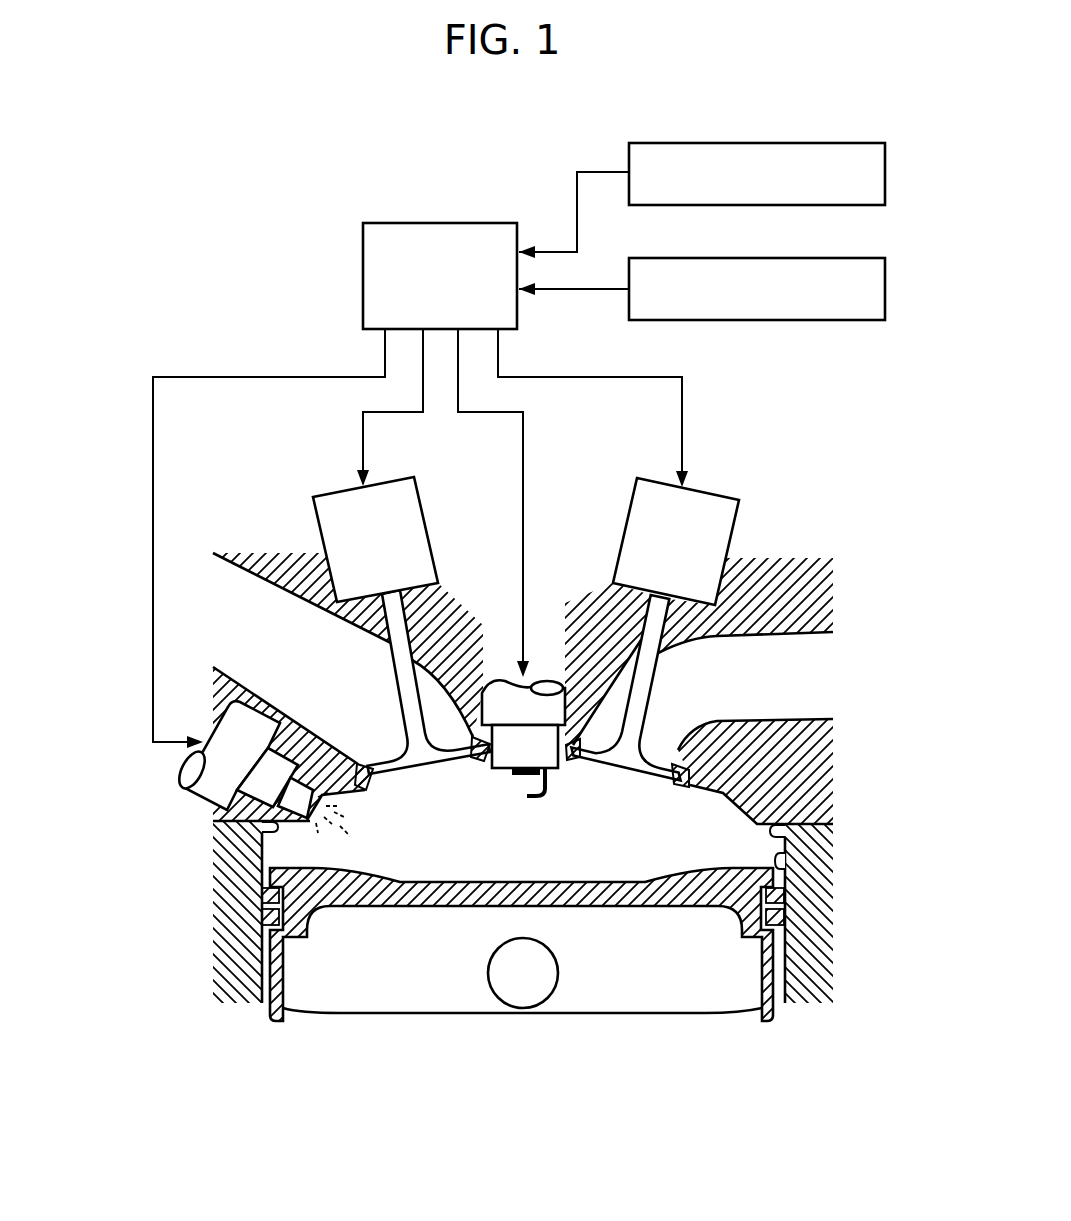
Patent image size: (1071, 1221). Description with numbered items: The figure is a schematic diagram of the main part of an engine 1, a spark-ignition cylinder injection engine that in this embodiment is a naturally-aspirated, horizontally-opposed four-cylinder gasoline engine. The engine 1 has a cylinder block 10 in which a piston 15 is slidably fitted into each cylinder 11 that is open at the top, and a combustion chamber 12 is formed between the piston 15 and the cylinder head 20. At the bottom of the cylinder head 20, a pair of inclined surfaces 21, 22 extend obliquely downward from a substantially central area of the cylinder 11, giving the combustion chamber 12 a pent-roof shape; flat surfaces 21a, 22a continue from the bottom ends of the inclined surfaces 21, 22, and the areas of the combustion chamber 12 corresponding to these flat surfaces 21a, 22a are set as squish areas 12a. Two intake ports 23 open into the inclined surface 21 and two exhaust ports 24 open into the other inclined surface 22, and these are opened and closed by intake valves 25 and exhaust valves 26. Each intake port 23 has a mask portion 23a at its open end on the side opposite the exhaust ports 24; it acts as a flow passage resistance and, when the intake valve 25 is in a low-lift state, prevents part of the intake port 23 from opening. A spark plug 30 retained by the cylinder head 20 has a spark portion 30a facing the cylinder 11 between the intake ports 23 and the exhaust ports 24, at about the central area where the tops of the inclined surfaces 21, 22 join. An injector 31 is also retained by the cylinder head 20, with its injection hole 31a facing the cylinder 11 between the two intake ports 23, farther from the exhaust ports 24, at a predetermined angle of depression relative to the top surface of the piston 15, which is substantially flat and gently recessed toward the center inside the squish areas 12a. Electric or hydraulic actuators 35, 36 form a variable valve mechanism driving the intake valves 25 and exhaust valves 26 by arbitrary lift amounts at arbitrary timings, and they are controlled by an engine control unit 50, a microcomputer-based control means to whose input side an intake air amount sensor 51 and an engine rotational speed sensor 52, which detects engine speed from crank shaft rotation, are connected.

The engine 1 is at (112, 613).
The cylinder block 10 is at (820, 917).
The cylinder 11 is at (790, 866).
The combustion chamber 12 is at (578, 862).
The squish area 12a is at (316, 850).
The piston 15 is at (770, 960).
The cylinder head 20 is at (825, 772).
The inclined surface 21 is at (375, 790).
The flat surface 21a is at (272, 828).
The inclined surface 22 is at (694, 790).
The flat surface 22a is at (787, 837).
The intake port 23 is at (483, 762).
The mask portion 23a is at (396, 783).
The exhaust port 24 is at (580, 762).
The intake valve 25 is at (398, 750).
The exhaust valve 26 is at (648, 748).
The spark plug 30 is at (548, 681).
The spark portion 30a is at (513, 797).
The injector 31 is at (181, 782).
The injection hole 31a is at (338, 808).
The actuator 35 is at (424, 517).
The actuator 36 is at (627, 520).
The engine control unit (ECU) 50 is at (478, 223).
The intake air amount sensor 51 is at (852, 143).
The engine rotational speed sensor 52 is at (852, 258).